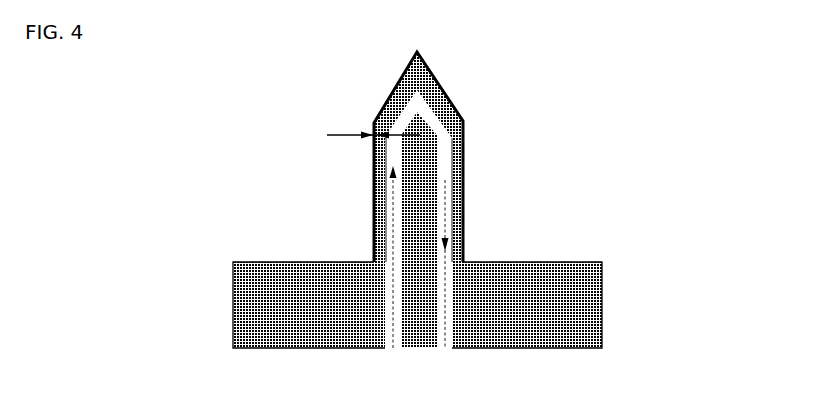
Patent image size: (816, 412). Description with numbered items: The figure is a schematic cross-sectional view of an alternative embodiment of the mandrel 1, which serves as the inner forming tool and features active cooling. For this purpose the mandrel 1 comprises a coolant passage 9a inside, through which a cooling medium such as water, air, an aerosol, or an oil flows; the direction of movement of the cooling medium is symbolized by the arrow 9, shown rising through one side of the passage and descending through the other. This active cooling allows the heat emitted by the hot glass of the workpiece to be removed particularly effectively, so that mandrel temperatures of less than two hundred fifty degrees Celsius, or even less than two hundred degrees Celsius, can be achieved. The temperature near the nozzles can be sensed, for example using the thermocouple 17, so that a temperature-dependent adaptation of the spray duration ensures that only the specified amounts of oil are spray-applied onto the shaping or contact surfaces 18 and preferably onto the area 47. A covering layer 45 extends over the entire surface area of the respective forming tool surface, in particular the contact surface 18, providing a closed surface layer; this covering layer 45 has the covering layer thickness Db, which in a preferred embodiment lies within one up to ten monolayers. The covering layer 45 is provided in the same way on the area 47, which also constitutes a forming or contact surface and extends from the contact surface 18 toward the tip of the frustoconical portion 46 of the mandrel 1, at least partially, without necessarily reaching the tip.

The mandrel 1 is at (583, 315).
The arrow 9 is at (445, 197).
The coolant passage 9a is at (445, 325).
The thermocouple 17 is at (373, 180).
The contact surface 18 is at (463, 168).
The covering layer 45 is at (384, 104).
The frustoconical portion 46 is at (428, 68).
The area 47 is at (389, 100).
The covering layer thickness Db is at (373, 134).